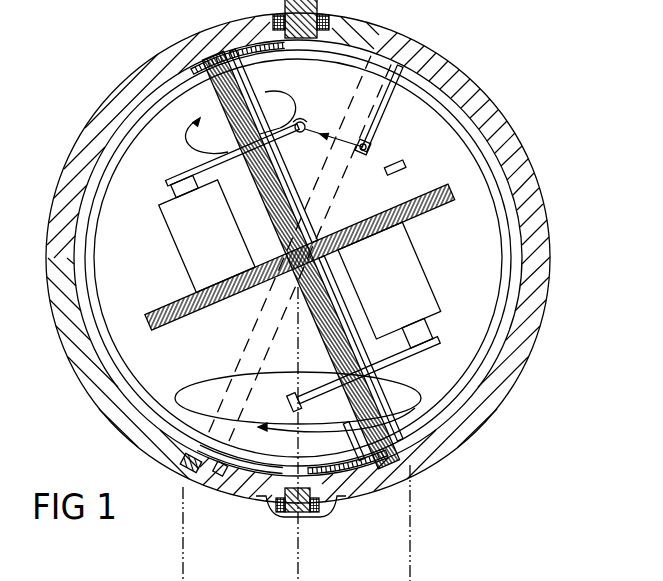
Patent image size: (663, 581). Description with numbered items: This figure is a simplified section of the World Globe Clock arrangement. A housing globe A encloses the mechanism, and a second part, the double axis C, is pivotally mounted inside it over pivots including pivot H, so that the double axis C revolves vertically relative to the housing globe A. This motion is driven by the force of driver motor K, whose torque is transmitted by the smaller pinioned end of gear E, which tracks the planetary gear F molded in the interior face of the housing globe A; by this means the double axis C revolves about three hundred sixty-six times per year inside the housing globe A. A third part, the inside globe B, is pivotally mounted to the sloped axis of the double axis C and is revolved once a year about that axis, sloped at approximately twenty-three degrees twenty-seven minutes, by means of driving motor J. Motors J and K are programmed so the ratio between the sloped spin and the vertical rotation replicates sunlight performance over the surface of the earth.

The housing globe A is at (495, 96).
The inside globe B is at (514, 217).
The double axis C is at (348, 172).
The gear E is at (291, 399).
The planetary gear F is at (186, 472).
The pivot H is at (292, 516).
The driving motor J is at (181, 252).
The driver motor K is at (424, 256).